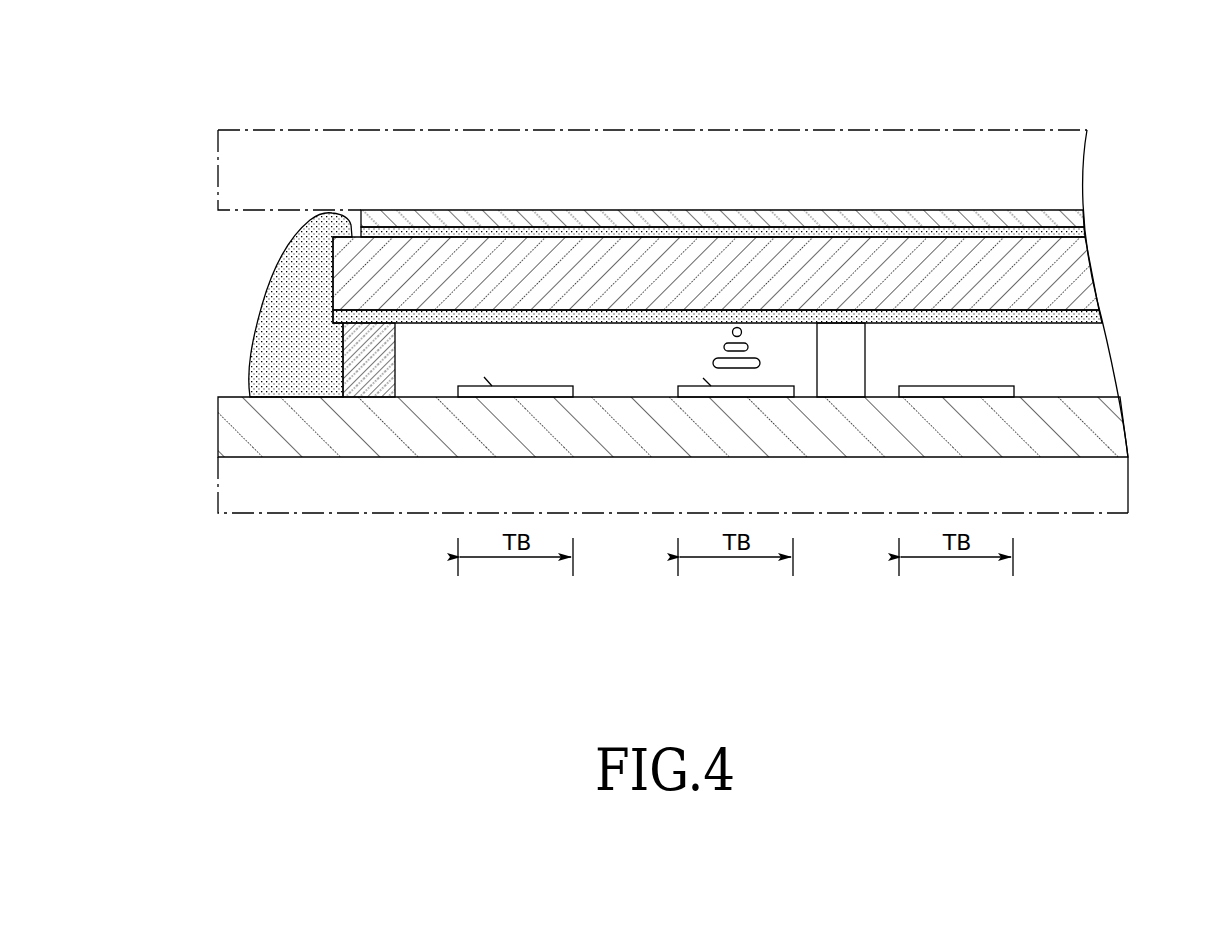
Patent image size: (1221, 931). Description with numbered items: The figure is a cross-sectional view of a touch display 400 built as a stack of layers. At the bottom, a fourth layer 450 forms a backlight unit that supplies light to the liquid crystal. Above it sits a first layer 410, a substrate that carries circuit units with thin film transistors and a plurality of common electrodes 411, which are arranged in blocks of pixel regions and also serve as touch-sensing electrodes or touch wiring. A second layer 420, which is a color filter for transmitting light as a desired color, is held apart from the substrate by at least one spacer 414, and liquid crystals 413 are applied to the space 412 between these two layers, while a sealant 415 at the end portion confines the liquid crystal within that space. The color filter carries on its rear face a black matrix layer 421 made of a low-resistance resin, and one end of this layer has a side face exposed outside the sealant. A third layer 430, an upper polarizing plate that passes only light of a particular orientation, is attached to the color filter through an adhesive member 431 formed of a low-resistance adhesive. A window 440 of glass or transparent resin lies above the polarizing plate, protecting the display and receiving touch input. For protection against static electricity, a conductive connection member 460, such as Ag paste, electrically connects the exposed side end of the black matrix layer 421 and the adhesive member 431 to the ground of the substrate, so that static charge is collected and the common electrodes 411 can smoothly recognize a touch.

The touch display 400 is at (1108, 82).
The first layer 410 is at (228, 431).
The common electrodes 411 is at (484, 377).
The space 412 is at (1069, 335).
The liquid crystals 413 is at (760, 363).
The spacer 414 is at (867, 364).
The sealant 415 is at (395, 358).
The second layer 420 is at (1077, 273).
The black matrix layer 421 is at (1090, 315).
The third layer 430 is at (1031, 219).
The adhesive member 431 is at (1077, 232).
The window 440 is at (763, 145).
The fourth layer 450 is at (285, 490).
The conductive connection member 460 is at (264, 308).